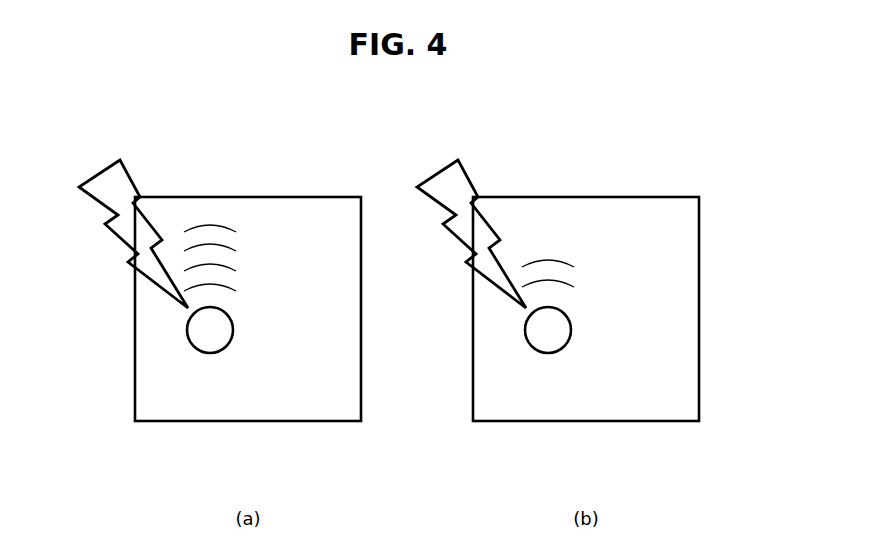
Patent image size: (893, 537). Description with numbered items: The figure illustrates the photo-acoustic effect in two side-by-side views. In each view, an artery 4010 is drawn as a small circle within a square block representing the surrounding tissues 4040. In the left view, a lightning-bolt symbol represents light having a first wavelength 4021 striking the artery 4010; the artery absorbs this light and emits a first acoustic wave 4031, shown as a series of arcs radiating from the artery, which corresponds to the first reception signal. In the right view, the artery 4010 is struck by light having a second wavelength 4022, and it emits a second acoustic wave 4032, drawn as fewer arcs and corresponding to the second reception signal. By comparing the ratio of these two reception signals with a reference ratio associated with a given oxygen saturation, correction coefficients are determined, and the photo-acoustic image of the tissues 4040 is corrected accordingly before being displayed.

The artery 4010 is at (210, 353).
The light having a first wavelength 4021 is at (100, 172).
The light having a second wavelength 4022 is at (438, 172).
The first acoustic wave 4031 is at (210, 220).
The second acoustic wave 4032 is at (547, 255).
The tissues 4040 is at (312, 402).